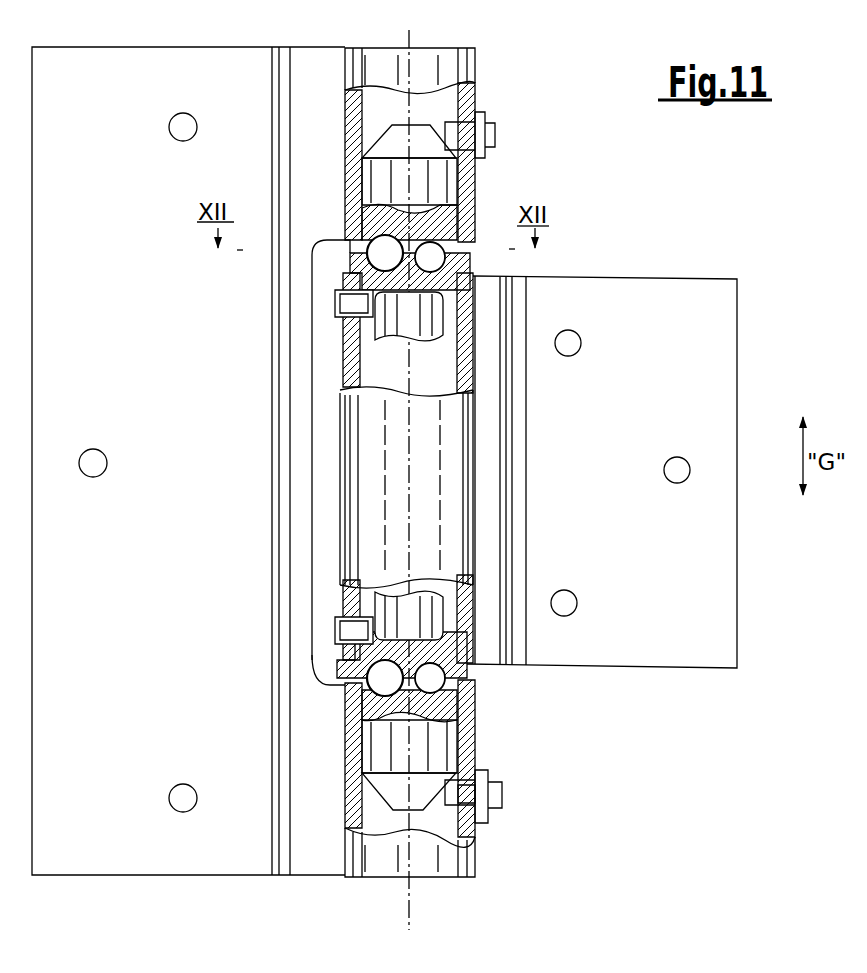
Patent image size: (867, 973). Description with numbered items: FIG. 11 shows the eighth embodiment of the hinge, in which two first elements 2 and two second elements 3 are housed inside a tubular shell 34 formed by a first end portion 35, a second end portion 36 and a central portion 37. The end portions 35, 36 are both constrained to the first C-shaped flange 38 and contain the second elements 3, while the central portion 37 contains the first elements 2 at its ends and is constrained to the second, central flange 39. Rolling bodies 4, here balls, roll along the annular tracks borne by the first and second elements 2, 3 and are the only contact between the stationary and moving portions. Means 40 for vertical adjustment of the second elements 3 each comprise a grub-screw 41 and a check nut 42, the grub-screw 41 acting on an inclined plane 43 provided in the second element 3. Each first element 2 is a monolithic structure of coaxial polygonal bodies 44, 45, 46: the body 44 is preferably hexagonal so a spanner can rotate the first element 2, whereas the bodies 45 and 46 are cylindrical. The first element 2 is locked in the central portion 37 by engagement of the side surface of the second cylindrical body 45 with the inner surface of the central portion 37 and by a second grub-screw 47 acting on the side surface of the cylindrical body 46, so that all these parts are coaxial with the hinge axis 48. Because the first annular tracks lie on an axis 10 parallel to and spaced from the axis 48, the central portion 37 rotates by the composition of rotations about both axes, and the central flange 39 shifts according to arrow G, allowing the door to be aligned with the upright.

The first element 2 is at (377, 342).
The second element 3 is at (438, 183).
The rolling bodies 4 is at (352, 287).
The axis 10 is at (417, 140).
The tubular shell 34 is at (328, 125).
The first end portion 35 is at (465, 67).
The second end portion 36 is at (463, 862).
The central portion 37 is at (363, 438).
The first C-shaped flange 38 is at (102, 857).
The second central flange 39 is at (728, 438).
The means for vertical adjustment 40 is at (502, 120).
The grub-screw 41 is at (457, 138).
The check nut 42 is at (477, 822).
The inclined plane 43 is at (383, 143).
The polygonal body 44 is at (352, 267).
The second cylindrical body 45 is at (460, 290).
The cylindrical body 46 is at (433, 314).
The second grub-screw 47 is at (337, 310).
The axis of the hinge 48 is at (410, 38).